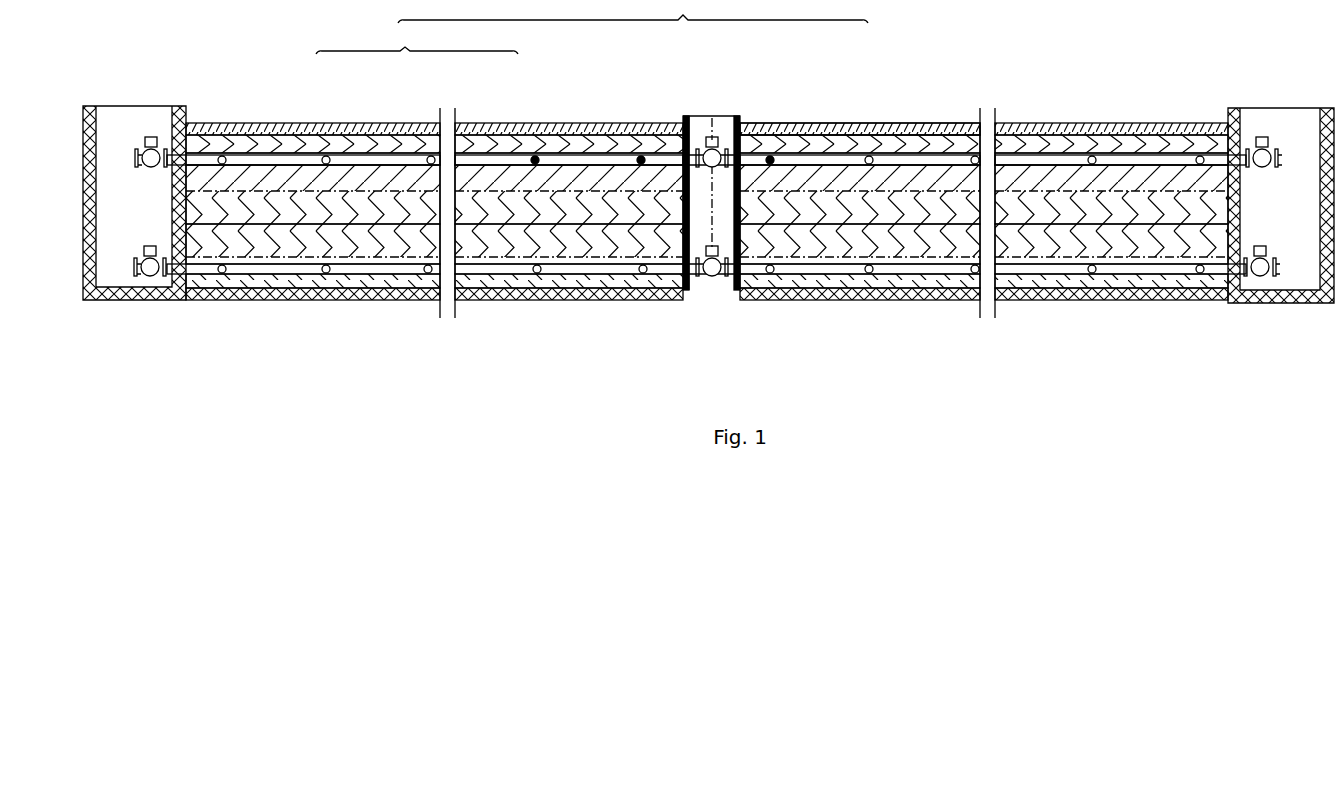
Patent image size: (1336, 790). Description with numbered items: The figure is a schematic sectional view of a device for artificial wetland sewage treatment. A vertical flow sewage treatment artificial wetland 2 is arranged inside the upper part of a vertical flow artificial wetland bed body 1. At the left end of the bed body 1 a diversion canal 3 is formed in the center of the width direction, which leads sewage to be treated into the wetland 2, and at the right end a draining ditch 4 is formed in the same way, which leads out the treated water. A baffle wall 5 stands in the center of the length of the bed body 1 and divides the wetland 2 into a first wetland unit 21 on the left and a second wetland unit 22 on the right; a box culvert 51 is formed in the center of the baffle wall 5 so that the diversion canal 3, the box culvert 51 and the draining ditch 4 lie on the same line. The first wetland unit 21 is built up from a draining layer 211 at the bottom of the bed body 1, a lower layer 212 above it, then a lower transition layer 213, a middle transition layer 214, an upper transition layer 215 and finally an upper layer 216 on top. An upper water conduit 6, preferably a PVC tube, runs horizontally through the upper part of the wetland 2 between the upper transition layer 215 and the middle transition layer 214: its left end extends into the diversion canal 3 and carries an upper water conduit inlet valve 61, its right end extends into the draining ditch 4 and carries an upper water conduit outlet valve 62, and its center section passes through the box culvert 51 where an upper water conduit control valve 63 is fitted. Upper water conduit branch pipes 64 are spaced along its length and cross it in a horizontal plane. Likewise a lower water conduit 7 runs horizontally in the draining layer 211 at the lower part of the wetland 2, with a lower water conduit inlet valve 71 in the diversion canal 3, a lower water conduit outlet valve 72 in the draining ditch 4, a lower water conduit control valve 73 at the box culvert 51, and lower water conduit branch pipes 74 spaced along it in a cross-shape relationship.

The vertical flow artificial wetland bed body 1 is at (268, 296).
The vertical flow sewage treatment artificial wetland 2 is at (633, 11).
The first wetland unit 21 is at (417, 42).
The second wetland unit 22 is at (893, 123).
The draining layer 211 is at (296, 282).
The lower layer 212 is at (340, 240).
The lower transition layer 213 is at (388, 196).
The middle transition layer 214 is at (420, 162).
The upper transition layer 215 is at (467, 132).
The upper layer 216 is at (508, 130).
The diversion canal 3 is at (118, 120).
The draining ditch 4 is at (1298, 120).
The baffle wall 5 is at (712, 166).
The box culvert 51 is at (676, 222).
The upper water conduit 6 is at (512, 162).
The upper water conduit inlet valve 61 is at (150, 148).
The upper water conduit outlet valve 62 is at (1264, 150).
The upper water conduit control valve 63 is at (740, 164).
The upper water conduit branch pipe 64 is at (540, 163).
The lower water conduit 7 is at (398, 270).
The lower water conduit inlet valve 71 is at (150, 270).
The lower water conduit outlet valve 72 is at (1258, 276).
The lower water conduit control valve 73 is at (714, 274).
The lower water conduit branch pipe 74 is at (327, 273).